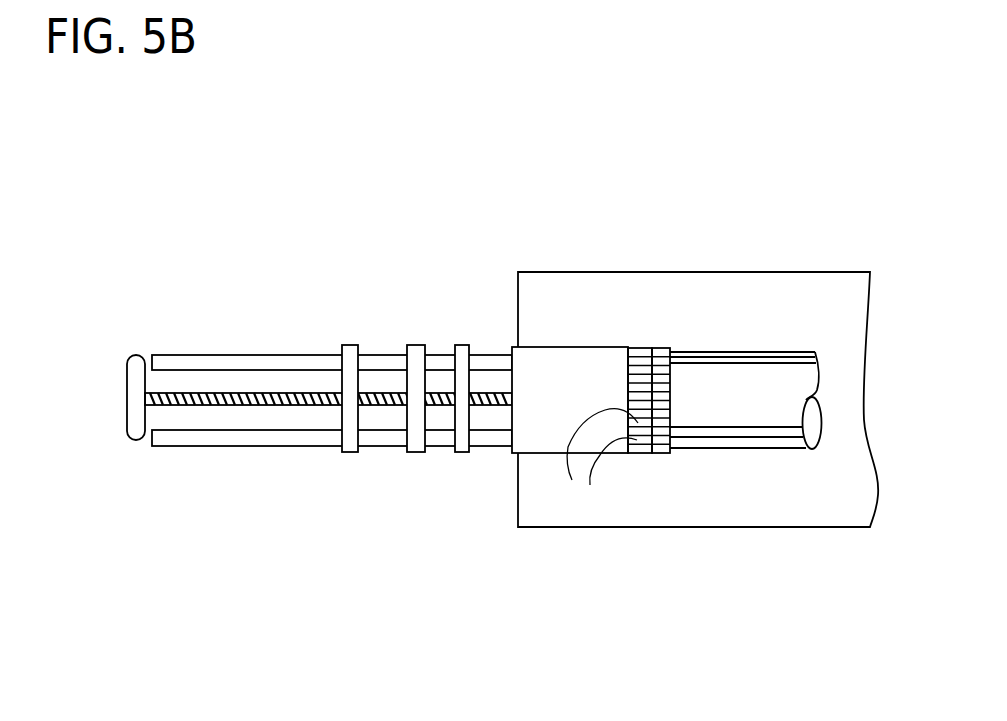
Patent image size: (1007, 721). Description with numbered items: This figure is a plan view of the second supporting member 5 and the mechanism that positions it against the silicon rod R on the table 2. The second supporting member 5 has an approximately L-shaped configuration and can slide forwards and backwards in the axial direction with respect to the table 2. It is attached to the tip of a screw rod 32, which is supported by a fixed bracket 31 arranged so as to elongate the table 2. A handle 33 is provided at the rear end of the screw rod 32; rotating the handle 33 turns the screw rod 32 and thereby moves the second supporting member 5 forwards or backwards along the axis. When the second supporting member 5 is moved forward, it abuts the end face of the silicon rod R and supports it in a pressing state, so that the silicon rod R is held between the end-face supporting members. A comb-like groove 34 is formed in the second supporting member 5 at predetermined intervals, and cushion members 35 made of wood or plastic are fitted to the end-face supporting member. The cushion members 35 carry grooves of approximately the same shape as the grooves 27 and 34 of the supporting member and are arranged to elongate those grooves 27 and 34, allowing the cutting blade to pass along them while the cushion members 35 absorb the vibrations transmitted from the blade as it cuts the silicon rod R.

The table 2 is at (775, 513).
The second supporting member 5 is at (638, 347).
The grooves 27 is at (572, 480).
The fixed bracket 31 is at (423, 453).
The screw rod 32 is at (275, 402).
The handle 33 is at (140, 438).
The comb-like groove 34 is at (672, 402).
The cushion members 35 is at (662, 347).
The silicon rod R is at (782, 355).